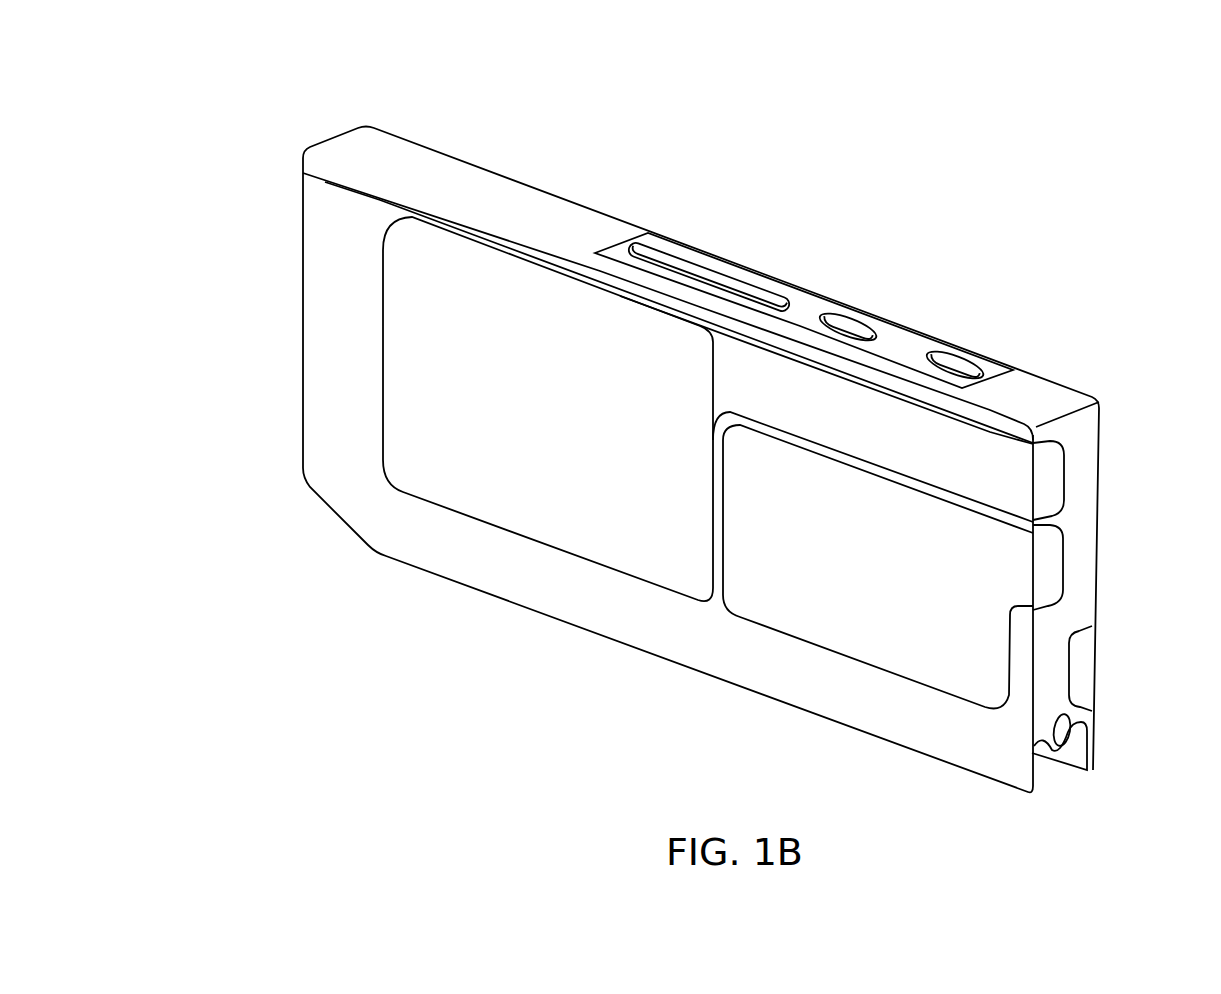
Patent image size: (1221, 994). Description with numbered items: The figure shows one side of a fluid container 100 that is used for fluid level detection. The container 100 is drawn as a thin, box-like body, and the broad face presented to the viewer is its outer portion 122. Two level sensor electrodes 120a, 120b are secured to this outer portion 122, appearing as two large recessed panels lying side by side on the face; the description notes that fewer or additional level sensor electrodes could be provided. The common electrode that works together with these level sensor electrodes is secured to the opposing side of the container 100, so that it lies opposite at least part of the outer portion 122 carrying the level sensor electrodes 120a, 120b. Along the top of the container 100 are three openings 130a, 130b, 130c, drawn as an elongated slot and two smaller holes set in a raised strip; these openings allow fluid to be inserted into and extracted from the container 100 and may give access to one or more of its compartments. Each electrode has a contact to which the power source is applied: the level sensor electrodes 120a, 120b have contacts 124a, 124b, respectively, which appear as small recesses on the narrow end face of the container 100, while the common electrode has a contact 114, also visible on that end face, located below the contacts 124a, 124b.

The fluid container 100 is at (697, 423).
The outer portion 122 is at (332, 377).
The level sensor electrode 120a is at (548, 498).
The level sensor electrode 120b is at (855, 595).
The opening 130c is at (697, 270).
The opening 130b is at (848, 328).
The opening 130a is at (955, 365).
The contact 124a is at (1053, 482).
The contact 124b is at (1052, 568).
The contact 114 is at (1082, 666).